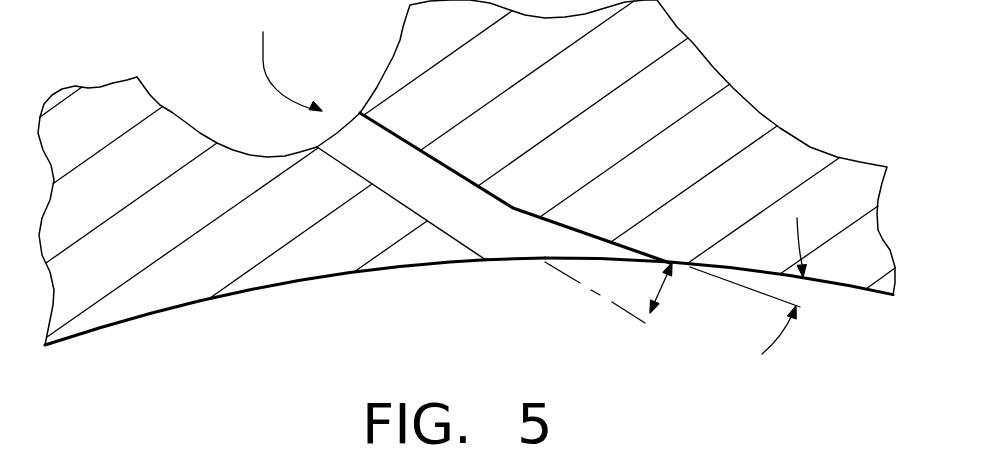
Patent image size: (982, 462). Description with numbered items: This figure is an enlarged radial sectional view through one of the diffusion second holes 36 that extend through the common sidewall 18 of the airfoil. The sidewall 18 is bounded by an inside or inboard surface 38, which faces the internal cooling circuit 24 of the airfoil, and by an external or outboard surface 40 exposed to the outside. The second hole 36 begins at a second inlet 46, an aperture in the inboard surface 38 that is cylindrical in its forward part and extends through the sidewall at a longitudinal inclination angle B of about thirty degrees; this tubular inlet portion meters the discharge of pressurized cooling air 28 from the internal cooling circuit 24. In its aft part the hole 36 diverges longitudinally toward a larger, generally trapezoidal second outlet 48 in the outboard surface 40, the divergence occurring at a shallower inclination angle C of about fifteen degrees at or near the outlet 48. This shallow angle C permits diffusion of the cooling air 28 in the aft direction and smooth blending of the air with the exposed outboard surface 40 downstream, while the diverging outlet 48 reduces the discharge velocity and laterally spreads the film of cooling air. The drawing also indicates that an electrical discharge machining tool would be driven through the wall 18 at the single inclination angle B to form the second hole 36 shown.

The sidewall 18 is at (175, 227).
The internal cooling circuit 24 is at (287, 142).
The cooling air 28 is at (265, 60).
The second hole 36 is at (438, 227).
The inboard surface 38 is at (172, 112).
The outboard surface 40 is at (240, 297).
The second inlet 46 is at (360, 114).
The second outlet 48 is at (515, 260).
The inclination angle B is at (655, 297).
The inclination angle C is at (785, 342).